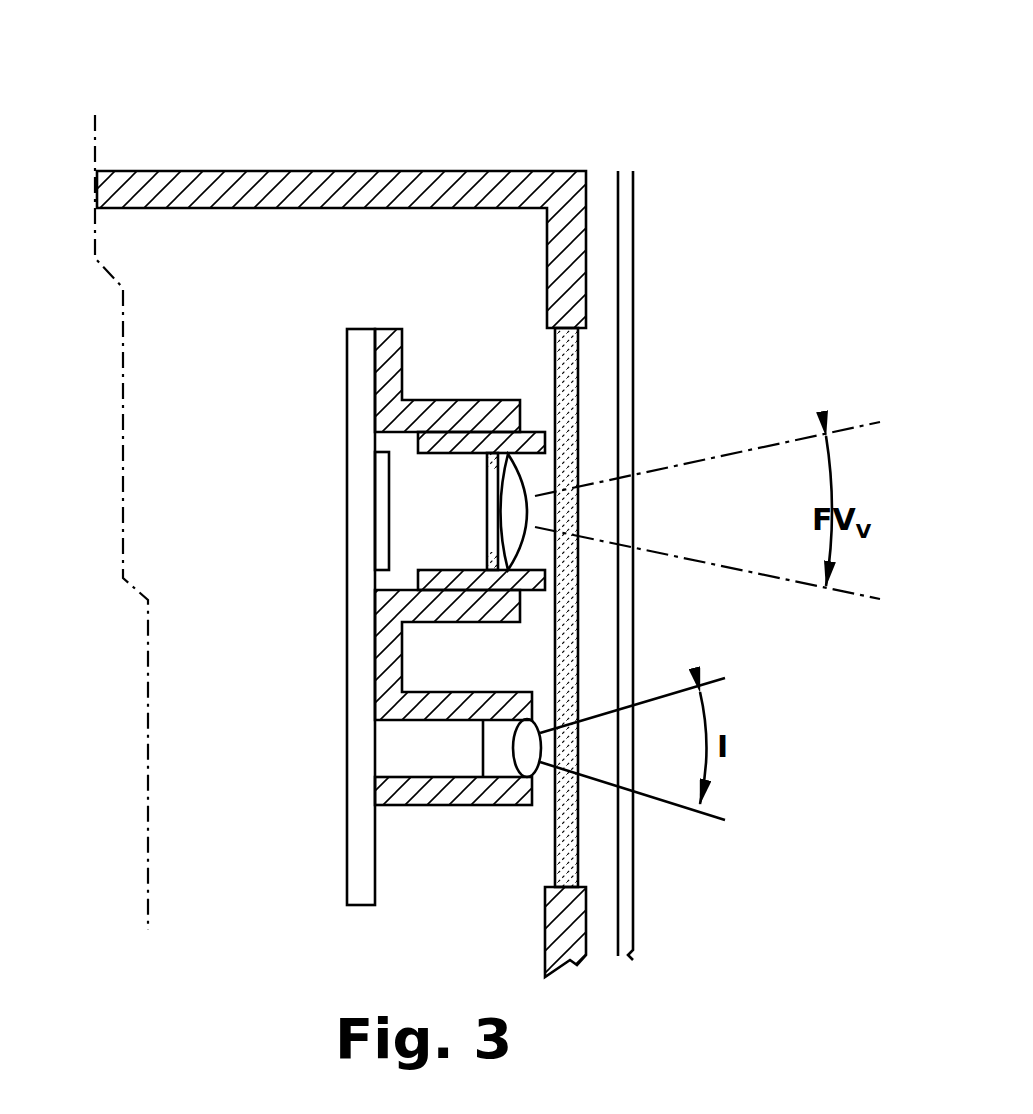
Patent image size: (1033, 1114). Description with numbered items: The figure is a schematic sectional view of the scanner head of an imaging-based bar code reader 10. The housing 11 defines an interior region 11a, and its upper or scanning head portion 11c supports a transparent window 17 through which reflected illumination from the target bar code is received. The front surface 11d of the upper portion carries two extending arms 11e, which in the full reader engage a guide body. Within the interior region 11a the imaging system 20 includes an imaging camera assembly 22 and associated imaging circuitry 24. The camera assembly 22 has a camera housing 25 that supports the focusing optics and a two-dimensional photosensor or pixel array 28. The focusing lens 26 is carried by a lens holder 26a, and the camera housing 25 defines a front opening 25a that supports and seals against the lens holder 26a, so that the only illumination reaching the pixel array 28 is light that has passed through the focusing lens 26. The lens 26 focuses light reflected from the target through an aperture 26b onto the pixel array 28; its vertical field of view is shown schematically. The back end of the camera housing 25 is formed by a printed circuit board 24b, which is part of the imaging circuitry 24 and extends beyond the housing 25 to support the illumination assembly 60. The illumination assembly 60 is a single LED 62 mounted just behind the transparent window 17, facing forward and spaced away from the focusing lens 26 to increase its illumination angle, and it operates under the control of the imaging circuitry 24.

The imaging-based bar code reader 10 is at (170, 105).
The housing 11 is at (427, 507).
The interior region 11a is at (183, 477).
The upper or scanning head portion 11c is at (375, 170).
The front surface 11d is at (585, 230).
The extending arms 11e is at (628, 287).
The transparent window 17 is at (565, 625).
The imaging system 20 is at (160, 383).
The imaging camera assembly 22 is at (340, 380).
The imaging circuitry 24 is at (371, 523).
The printed circuit board 24b is at (365, 662).
The camera housing 25 is at (425, 412).
The front opening 25a is at (515, 448).
The focusing lens 26 is at (515, 496).
The lens holder 26a is at (445, 584).
The aperture 26b is at (487, 557).
The photosensor or pixel array 28 is at (378, 538).
The illumination assembly 60 is at (410, 794).
The LED 62 is at (497, 757).